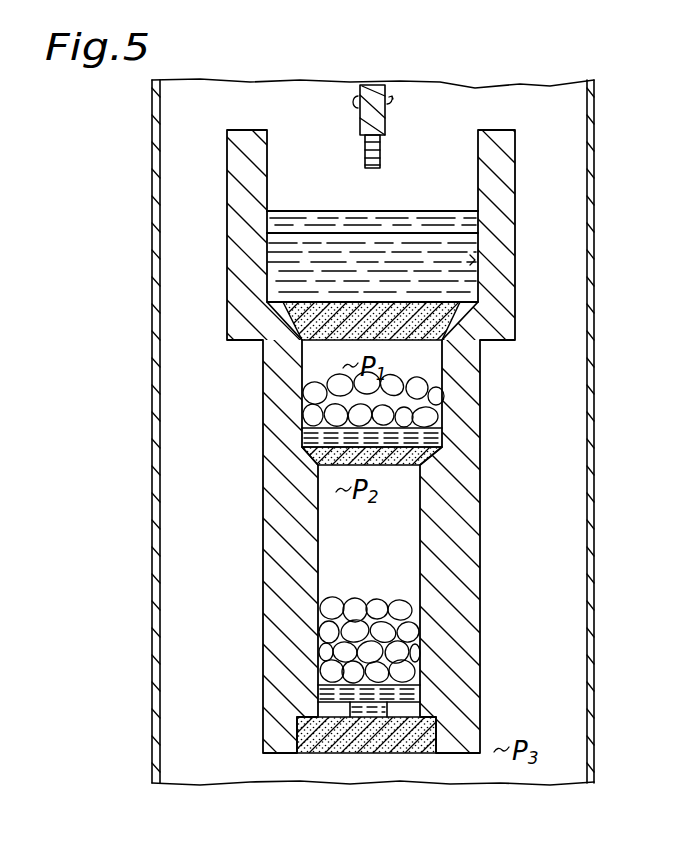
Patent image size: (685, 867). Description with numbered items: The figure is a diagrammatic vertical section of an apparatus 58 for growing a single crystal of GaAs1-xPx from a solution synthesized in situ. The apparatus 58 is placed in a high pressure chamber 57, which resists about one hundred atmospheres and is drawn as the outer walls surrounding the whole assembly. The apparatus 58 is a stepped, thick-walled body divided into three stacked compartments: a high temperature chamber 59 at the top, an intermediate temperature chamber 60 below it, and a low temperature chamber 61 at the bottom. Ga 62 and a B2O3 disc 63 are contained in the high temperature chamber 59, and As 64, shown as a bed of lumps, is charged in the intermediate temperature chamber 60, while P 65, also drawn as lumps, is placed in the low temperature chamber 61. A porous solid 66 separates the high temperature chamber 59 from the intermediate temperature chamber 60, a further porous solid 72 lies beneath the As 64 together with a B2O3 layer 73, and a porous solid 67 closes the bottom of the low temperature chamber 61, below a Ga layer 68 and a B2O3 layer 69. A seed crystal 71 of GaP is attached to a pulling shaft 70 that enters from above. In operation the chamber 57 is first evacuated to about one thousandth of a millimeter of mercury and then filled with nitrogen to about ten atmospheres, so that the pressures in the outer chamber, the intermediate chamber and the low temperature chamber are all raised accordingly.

The high pressure chamber 57 is at (596, 240).
The apparatus 58 is at (497, 152).
The high temperature chamber 59 is at (470, 262).
The intermediate temperature chamber 60 is at (425, 355).
The low temperature chamber 61 is at (403, 528).
The Ga 62 is at (282, 265).
The B2O3 disc 63 is at (330, 215).
The As 64 is at (318, 400).
The P 65 is at (333, 632).
The porous solid 66 is at (290, 320).
The porous solid 67 is at (335, 740).
The Ga layer 68 is at (388, 712).
The B2O3 layer 69 is at (417, 693).
The pulling shaft 70 is at (378, 88).
The seed crystal 71 is at (382, 147).
The porous solid 72 is at (430, 462).
The B2O3 layer 73 is at (440, 437).